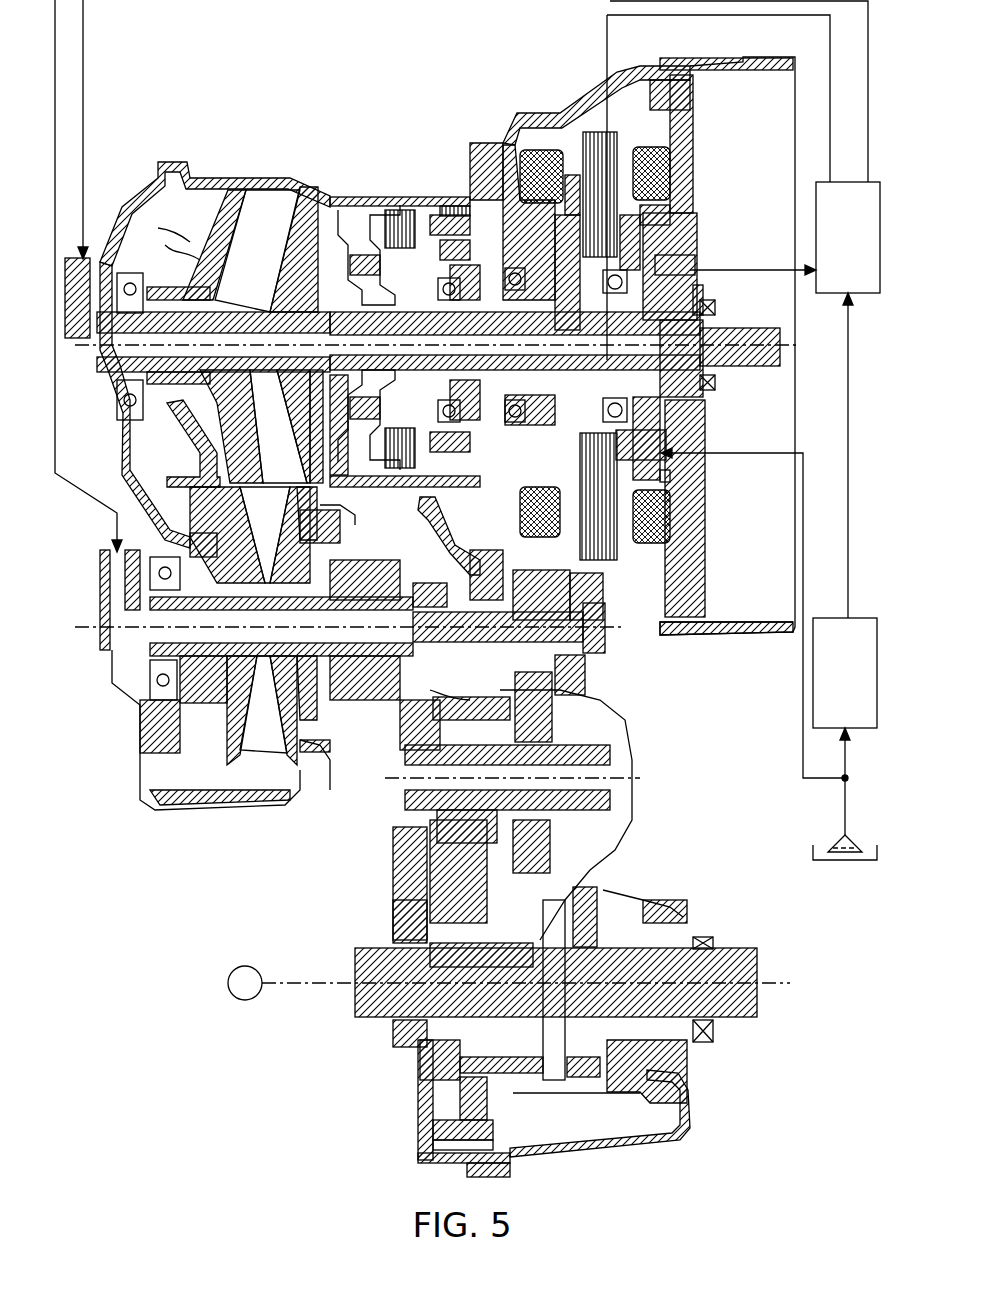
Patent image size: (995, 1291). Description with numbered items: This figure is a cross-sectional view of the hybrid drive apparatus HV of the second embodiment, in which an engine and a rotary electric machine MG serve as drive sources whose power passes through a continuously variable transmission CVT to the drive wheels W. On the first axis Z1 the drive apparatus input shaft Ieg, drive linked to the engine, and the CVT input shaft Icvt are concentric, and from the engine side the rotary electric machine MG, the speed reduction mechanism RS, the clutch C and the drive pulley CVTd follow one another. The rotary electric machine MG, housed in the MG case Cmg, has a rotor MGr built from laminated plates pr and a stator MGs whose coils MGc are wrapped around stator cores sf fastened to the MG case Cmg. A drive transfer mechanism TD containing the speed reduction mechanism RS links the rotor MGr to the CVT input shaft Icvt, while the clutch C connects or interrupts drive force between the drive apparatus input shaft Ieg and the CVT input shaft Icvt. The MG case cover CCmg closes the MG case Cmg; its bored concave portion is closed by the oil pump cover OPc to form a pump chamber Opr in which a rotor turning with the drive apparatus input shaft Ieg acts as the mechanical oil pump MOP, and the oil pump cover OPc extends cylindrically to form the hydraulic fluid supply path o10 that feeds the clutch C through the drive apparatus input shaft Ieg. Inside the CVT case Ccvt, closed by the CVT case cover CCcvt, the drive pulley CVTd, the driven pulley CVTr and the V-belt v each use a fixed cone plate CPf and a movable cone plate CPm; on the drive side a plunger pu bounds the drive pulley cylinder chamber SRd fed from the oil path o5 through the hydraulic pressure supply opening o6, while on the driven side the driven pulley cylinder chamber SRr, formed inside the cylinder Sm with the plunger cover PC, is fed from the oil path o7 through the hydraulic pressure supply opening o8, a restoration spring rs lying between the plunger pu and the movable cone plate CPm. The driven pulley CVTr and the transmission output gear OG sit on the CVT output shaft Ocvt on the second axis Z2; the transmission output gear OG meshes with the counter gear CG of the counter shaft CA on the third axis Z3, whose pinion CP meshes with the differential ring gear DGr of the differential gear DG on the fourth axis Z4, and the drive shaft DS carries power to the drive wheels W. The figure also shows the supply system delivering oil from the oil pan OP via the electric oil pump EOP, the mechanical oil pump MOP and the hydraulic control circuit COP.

The continuously variable transmission CVT is at (168, 136).
The CVT case Ccvt is at (188, 165).
The drive pulley CVTd is at (205, 122).
The movable cone plate CPm is at (220, 205).
The fixed cone plate CPf is at (300, 190).
The CVT case cover CCcvt is at (137, 190).
The hydraulic pressure supply opening o6 is at (123, 255).
The plunger pu is at (299, 458).
The CVT input shaft Icvt is at (240, 272).
The clutch C is at (392, 186).
The drive transfer mechanism TD is at (446, 274).
The speed reduction mechanism RS is at (450, 200).
The rotary electric machine MG is at (550, 96).
The MG case Cmg is at (575, 100).
The MG case cover CCmg is at (700, 117).
The rotor MGr is at (690, 208).
The oil pump cover OPc is at (690, 225).
The pump chamber Opr is at (688, 262).
The hydraulic control circuit COP is at (848, 237).
The mechanical oil pump MOP is at (690, 288).
The hydraulic fluid supply path o10 is at (700, 312).
The first axis Z1 is at (782, 348).
The drive apparatus input shaft Ieg is at (772, 370).
The drive pulley cylinder chamber SRd is at (197, 417).
The oil path o5 is at (222, 352).
The driven pulley cylinder chamber SRr is at (327, 520).
The restoration spring rs is at (292, 512).
The oil path o7 is at (223, 617).
The CVT output shaft Ocvt is at (450, 607).
The stator cores sf is at (570, 550).
The laminated plates pr is at (680, 476).
The coils MGc is at (672, 500).
The stator MGs is at (672, 530).
The second axis Z2 is at (100, 627).
The transmission output gear OG is at (598, 688).
The counter gear CG is at (600, 705).
The counter shaft CA is at (615, 757).
The third axis Z3 is at (635, 778).
The electric oil pump EOP is at (845, 673).
The V-belt v is at (253, 740).
The hydraulic pressure supply opening o8 is at (327, 747).
The cylinder Sm is at (305, 780).
The plunger cover PC is at (365, 775).
The pinion CP is at (400, 848).
The driven pulley CVTr is at (168, 860).
The differential ring gear DGr is at (415, 880).
The differential gear DG is at (610, 895).
The hybrid drive apparatus HV is at (128, 880).
The drive wheels W is at (245, 983).
The fourth axis Z4 is at (542, 988).
The drive shaft DS is at (750, 1040).
The oil pan OP is at (850, 862).